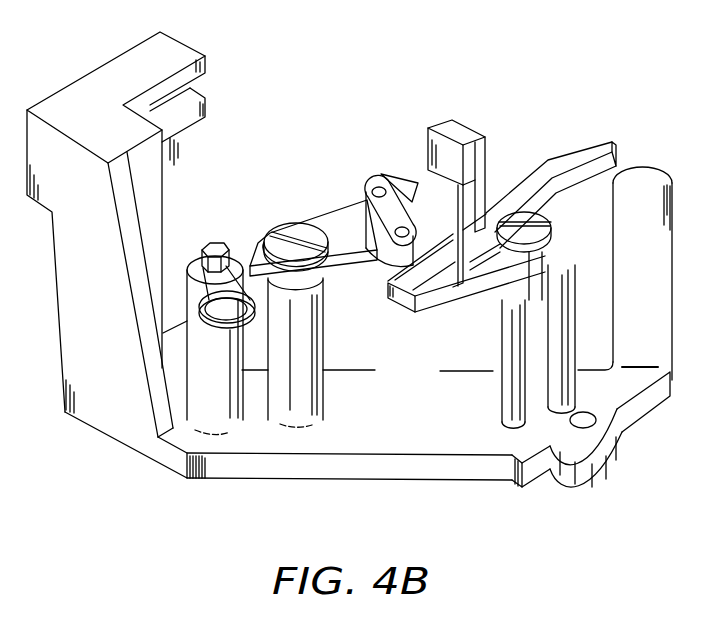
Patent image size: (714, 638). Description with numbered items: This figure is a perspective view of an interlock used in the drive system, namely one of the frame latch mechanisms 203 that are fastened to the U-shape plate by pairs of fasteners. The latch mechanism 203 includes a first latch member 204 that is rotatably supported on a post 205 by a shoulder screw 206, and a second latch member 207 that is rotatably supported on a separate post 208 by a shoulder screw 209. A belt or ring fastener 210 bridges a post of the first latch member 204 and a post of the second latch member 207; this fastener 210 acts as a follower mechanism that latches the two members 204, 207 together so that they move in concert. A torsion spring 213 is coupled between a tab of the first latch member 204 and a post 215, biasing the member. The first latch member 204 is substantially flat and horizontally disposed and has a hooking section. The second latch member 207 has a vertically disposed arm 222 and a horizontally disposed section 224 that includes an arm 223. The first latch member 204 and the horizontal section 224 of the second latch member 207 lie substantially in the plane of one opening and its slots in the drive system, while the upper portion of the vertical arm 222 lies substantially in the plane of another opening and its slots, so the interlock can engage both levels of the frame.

The frame latch mechanism 203 is at (391, 86).
The first latch member 204 is at (347, 218).
The post 205 is at (310, 395).
The shoulder screw 206 is at (291, 232).
The second latch member 207 is at (427, 307).
The post 208 is at (575, 328).
The shoulder screw 209 is at (513, 215).
The belt or ring fastener 210 is at (378, 262).
The torsion spring 213 is at (215, 330).
The post 215 is at (213, 242).
The vertically disposed arm 222 is at (462, 126).
The arm 223 is at (595, 148).
The horizontally disposed section 224 is at (483, 263).